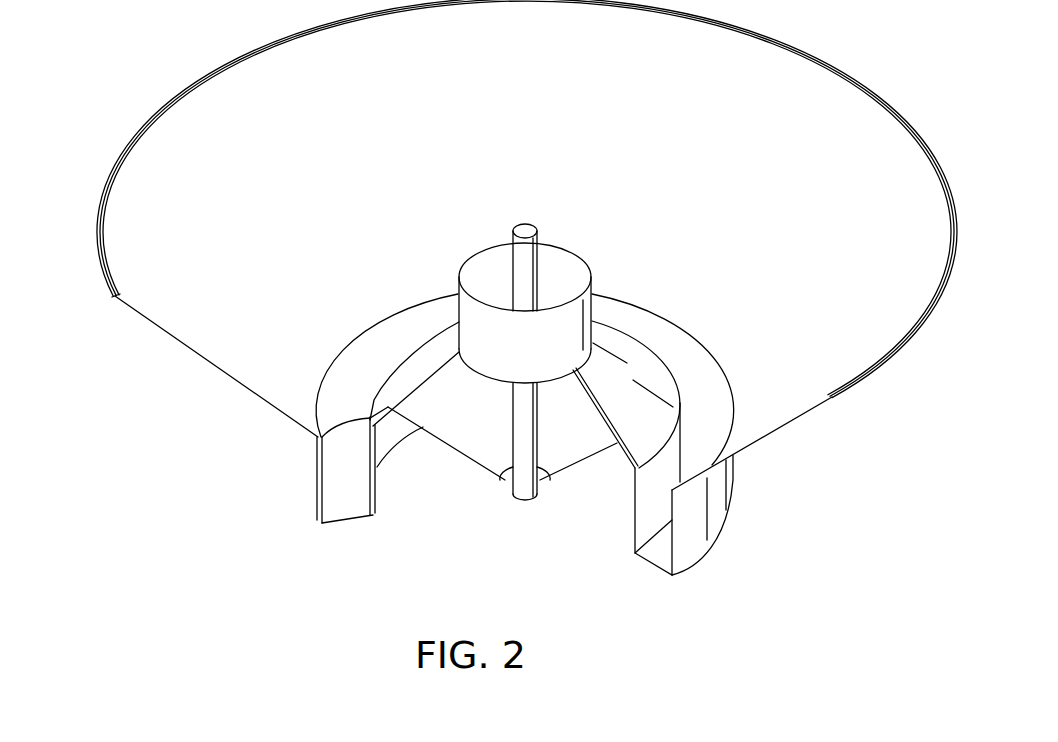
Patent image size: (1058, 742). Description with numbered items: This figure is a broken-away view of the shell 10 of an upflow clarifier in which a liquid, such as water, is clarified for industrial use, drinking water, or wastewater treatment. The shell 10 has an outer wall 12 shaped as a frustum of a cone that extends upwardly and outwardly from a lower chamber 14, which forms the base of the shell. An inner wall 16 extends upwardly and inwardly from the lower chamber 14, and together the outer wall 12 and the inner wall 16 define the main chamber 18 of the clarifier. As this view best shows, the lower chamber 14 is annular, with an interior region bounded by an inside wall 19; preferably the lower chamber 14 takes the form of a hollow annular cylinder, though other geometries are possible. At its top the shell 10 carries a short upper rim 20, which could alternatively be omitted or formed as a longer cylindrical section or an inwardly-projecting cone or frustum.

The shell 10 is at (527, 287).
The outer wall 12 is at (857, 118).
The lower chamber 14 is at (345, 500).
The inner wall 16 is at (628, 418).
The main chamber 18 is at (282, 243).
The inside wall 19 is at (372, 492).
The upper rim 20 is at (115, 298).